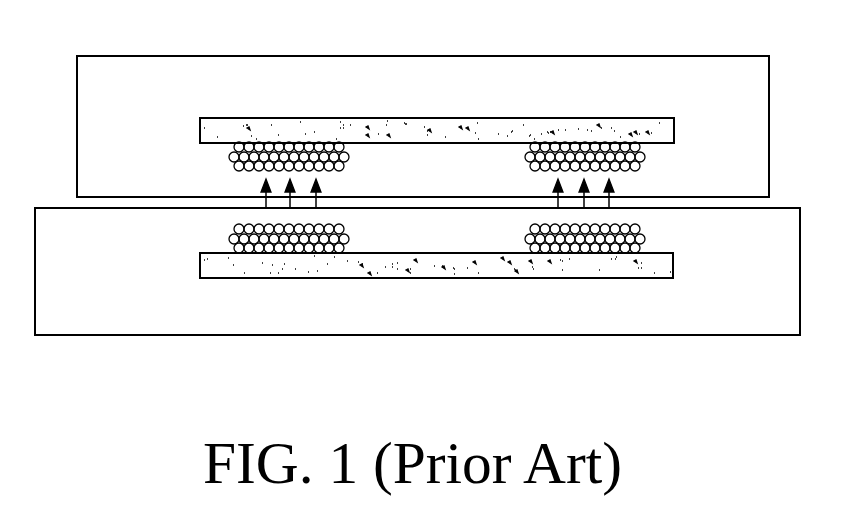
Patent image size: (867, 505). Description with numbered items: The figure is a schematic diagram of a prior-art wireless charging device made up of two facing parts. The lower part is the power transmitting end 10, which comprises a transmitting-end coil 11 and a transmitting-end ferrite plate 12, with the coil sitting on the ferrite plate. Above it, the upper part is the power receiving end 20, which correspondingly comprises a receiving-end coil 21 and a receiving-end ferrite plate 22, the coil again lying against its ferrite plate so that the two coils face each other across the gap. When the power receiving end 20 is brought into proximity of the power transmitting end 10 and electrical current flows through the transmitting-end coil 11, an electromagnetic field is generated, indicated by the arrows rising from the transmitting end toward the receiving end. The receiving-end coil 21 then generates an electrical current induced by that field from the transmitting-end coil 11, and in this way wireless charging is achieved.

The power transmitting end 10 is at (320, 312).
The transmitting-end coil 11 is at (232, 229).
The transmitting-end ferrite plate 12 is at (470, 273).
The power receiving end 20 is at (335, 75).
The receiving-end coil 21 is at (230, 155).
The receiving-end ferrite plate 22 is at (477, 124).